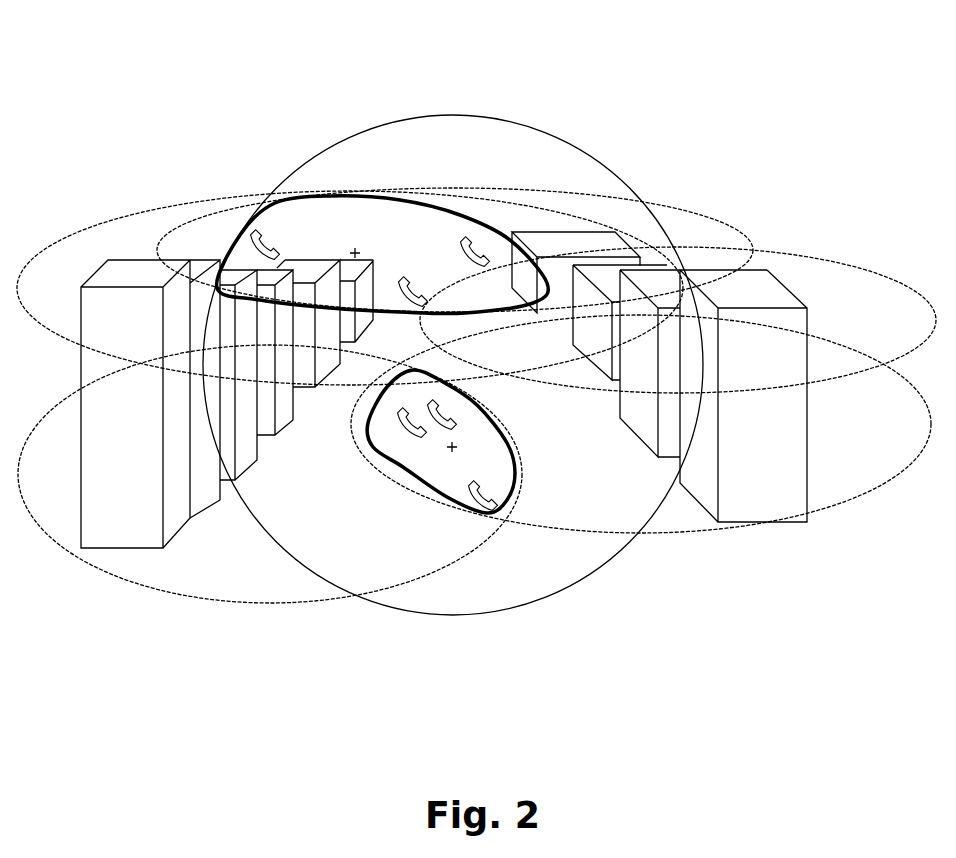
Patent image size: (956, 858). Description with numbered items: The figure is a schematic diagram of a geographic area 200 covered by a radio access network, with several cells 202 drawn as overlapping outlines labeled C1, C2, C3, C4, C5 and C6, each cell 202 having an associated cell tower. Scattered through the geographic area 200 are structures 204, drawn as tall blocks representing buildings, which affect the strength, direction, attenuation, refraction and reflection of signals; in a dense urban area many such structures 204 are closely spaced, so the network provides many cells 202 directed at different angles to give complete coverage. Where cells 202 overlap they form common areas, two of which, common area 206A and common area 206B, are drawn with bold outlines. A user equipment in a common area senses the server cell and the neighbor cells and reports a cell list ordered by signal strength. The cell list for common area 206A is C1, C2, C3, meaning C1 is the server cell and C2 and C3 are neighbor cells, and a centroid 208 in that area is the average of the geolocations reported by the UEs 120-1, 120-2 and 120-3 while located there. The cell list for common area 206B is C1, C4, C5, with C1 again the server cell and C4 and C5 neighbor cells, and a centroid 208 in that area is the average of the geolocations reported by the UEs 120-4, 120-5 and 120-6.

The geographic area 200 is at (72, 108).
The cell 202 is at (675, 180).
The structure 204 is at (143, 409).
The common area 206A is at (375, 453).
The common area 206B is at (353, 250).
The centroid 208 is at (455, 445).
The UE 120-1 is at (395, 415).
The UE 120-2 is at (443, 412).
The UE 120-3 is at (485, 515).
The UE 120-4 is at (253, 237).
The UE 120-5 is at (443, 285).
The UE 120-6 is at (462, 242).
The server cell C1 is at (600, 575).
The neighbor cell C2 is at (836, 507).
The neighbor cell C3 is at (300, 605).
The neighbor cell C4 is at (63, 243).
The neighbor cell C5 is at (703, 218).
The cell C6 is at (882, 270).